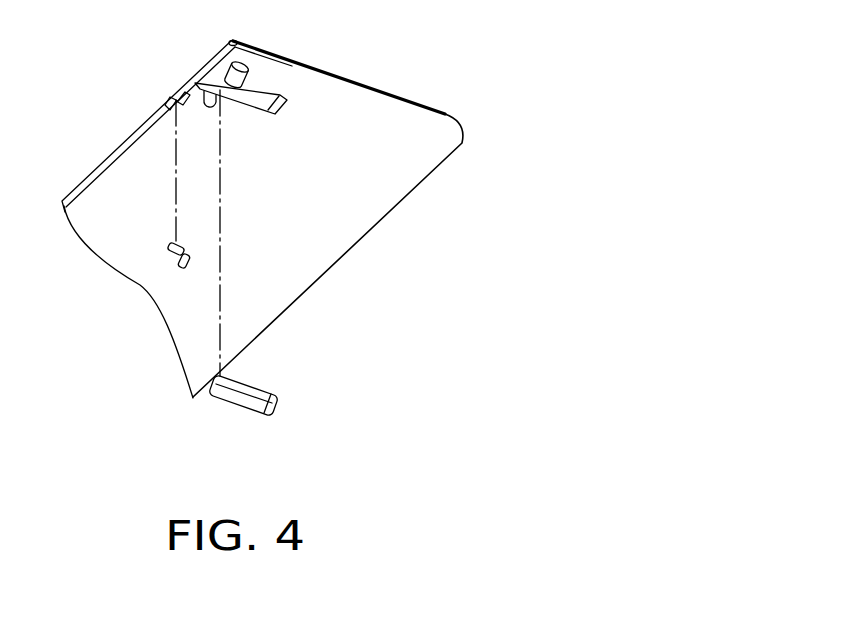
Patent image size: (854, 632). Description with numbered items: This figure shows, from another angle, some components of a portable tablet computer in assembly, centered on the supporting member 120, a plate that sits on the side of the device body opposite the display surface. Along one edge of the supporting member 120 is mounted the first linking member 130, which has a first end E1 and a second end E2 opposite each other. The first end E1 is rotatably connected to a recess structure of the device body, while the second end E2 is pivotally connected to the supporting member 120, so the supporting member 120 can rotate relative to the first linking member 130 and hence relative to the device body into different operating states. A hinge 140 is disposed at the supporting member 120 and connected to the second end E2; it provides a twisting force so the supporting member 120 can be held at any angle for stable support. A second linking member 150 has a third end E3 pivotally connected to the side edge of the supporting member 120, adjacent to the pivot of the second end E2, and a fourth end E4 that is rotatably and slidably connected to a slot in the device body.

The supporting member 120 is at (413, 112).
The first linking member 130 is at (242, 398).
The hinge 140 is at (245, 78).
The second linking member 150 is at (178, 256).
The first end E1 is at (275, 413).
The second end E2 is at (214, 383).
The third end E3 is at (169, 246).
The fourth end E4 is at (186, 266).